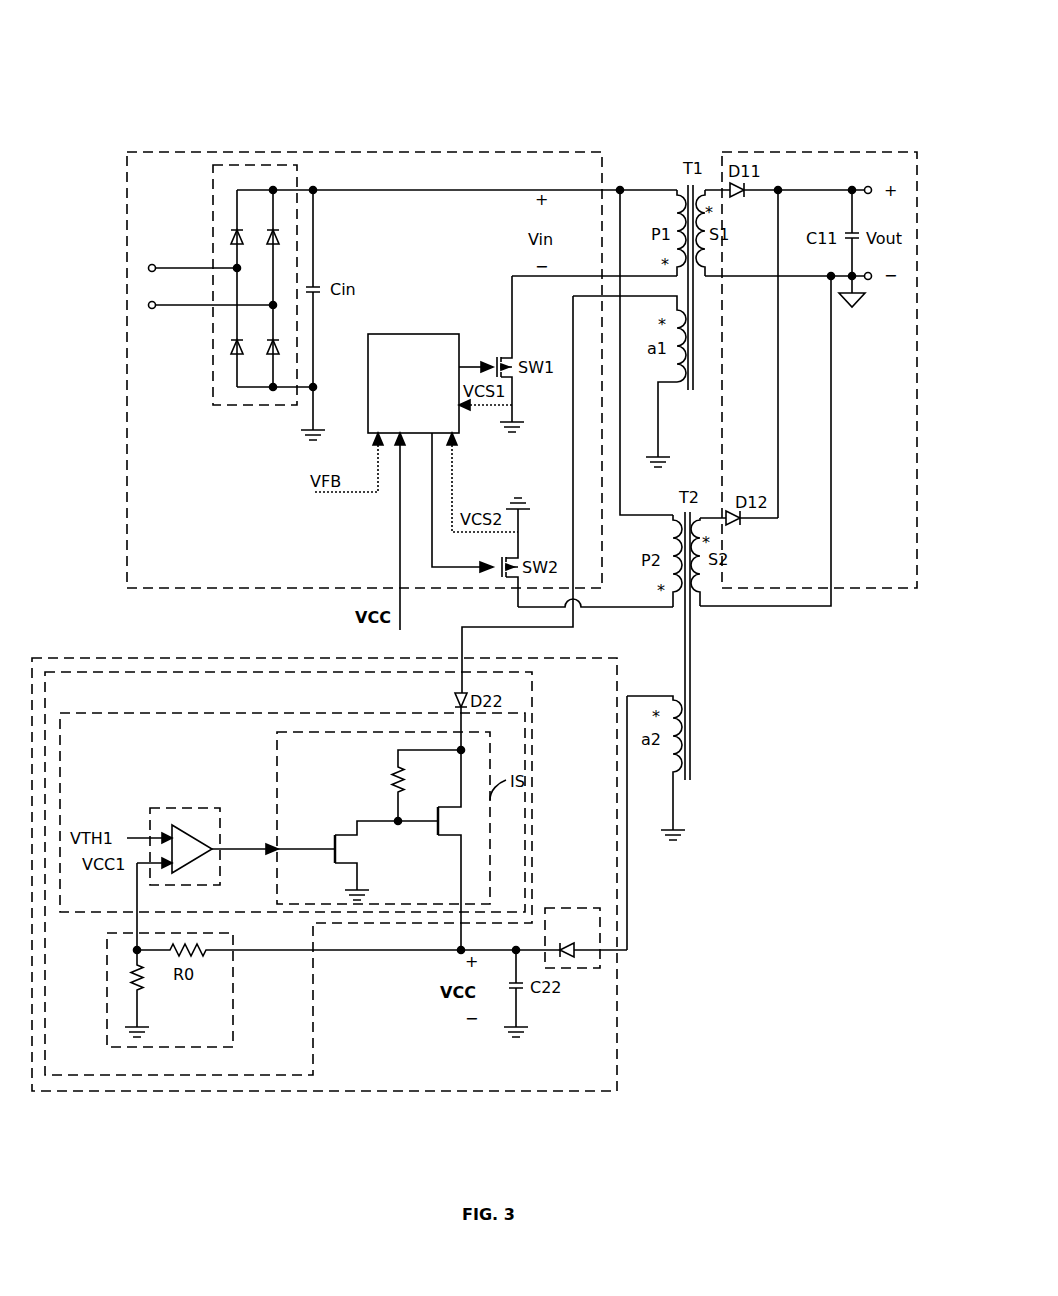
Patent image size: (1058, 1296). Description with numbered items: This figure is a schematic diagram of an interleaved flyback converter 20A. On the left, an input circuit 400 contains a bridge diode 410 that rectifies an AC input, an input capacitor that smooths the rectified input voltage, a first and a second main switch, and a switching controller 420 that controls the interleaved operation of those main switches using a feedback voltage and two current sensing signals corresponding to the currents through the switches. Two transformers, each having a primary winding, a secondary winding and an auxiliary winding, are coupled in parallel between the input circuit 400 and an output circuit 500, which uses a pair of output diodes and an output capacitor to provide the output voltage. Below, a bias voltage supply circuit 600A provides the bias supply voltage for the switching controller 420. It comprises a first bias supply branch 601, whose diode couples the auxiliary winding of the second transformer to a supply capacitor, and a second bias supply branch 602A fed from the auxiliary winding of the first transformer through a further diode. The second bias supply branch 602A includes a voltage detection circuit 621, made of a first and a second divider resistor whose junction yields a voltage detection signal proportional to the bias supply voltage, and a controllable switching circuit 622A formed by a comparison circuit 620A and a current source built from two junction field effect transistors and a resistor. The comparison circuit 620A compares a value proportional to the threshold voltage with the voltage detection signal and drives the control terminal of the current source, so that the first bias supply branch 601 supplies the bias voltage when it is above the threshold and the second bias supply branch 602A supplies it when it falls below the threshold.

The interleaved flyback converter 20A is at (682, 58).
The input circuit 400 is at (340, 152).
The bridge diode 410 is at (213, 192).
The switching controller 420 is at (388, 334).
The output circuit 500 is at (823, 152).
The bias voltage supply circuit 600A is at (192, 658).
The controllable switching circuit 622A is at (147, 714).
The comparison circuit 620A is at (165, 808).
The second bias supply branch 602A is at (533, 732).
The first bias supply branch 601 is at (553, 908).
The voltage detection circuit 621 is at (235, 1013).